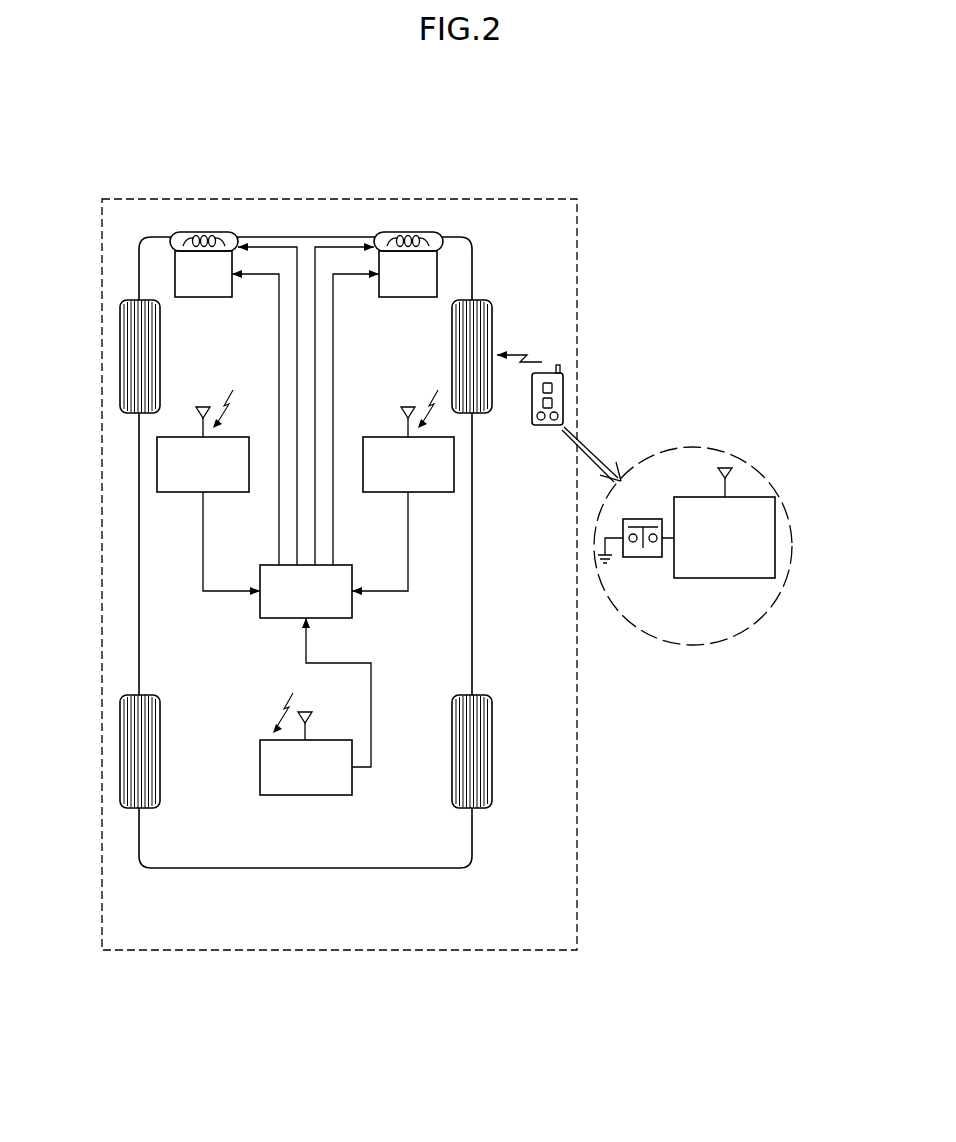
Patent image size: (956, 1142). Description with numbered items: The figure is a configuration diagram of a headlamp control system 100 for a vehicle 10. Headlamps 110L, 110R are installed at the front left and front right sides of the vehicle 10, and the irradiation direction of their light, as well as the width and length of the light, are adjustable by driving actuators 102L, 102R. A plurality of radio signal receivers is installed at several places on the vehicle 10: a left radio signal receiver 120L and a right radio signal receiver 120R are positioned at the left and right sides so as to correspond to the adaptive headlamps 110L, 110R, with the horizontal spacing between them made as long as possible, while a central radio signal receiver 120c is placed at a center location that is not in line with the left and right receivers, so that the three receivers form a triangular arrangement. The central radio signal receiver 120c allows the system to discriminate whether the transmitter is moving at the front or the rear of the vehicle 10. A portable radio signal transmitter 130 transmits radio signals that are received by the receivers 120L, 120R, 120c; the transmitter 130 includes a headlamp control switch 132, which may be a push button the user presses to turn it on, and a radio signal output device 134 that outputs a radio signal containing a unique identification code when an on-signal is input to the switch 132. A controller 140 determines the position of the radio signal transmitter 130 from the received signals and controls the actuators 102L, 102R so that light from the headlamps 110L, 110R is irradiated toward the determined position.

The headlamp control system 100 is at (563, 195).
The vehicle 10 is at (226, 870).
The left headlamp 110L is at (203, 232).
The right headlamp 110R is at (408, 232).
The left actuator 102L is at (203, 297).
The right actuator 102R is at (410, 297).
The left radio signal receiver 120L is at (180, 493).
The right radio signal receiver 120R is at (429, 493).
The central radio signal receiver 120c is at (306, 795).
The controller 140 is at (352, 606).
The radio signal transmitter 130 is at (548, 428).
The headlamp control switch 132 is at (643, 557).
The radio signal output device 134 is at (718, 578).